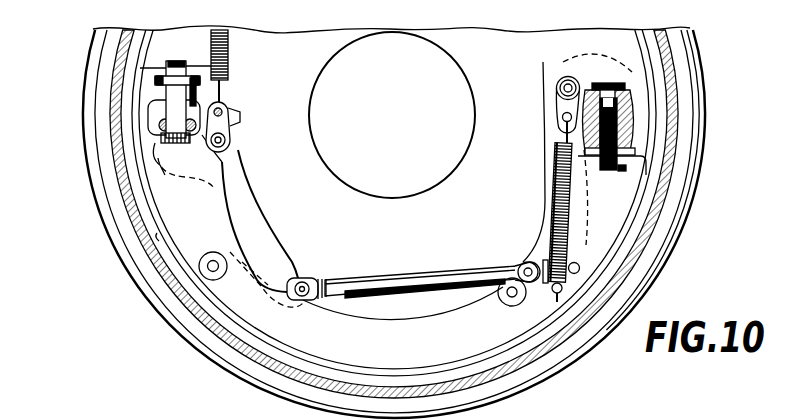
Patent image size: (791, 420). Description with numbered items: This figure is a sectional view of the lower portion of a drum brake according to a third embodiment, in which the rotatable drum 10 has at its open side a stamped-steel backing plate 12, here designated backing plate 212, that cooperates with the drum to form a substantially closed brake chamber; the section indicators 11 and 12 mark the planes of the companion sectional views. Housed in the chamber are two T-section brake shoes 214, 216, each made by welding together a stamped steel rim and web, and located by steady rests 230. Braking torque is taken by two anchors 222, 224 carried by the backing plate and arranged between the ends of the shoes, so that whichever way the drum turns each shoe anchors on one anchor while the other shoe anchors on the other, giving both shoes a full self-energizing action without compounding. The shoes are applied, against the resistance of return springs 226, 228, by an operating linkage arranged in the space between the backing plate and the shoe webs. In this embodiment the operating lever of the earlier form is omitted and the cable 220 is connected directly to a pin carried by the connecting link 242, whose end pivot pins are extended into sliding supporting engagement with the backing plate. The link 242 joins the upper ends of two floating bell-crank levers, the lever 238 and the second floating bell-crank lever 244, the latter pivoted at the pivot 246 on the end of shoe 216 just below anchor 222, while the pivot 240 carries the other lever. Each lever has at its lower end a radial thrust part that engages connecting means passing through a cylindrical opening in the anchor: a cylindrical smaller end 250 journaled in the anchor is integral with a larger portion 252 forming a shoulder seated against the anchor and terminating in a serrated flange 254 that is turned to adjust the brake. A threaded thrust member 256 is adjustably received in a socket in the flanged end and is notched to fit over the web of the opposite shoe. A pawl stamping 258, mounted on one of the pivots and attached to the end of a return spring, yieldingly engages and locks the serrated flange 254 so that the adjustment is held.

The rotatable drum 10 is at (660, 208).
The section line 11- 11 is at (260, 295).
The backing plate 12 is at (577, 44).
The backing plate 212 is at (497, 47).
The brake shoe 214 is at (197, 45).
The brake shoe 216 is at (173, 212).
The cable 220 is at (441, 268).
The anchor 222 is at (161, 100).
The anchor 224 is at (627, 138).
The return spring 226 is at (222, 78).
The return spring 228 is at (557, 197).
The steady rest 230 is at (203, 273).
The floating bell-crank lever 238 is at (556, 128).
The pivot 240 is at (556, 88).
The connecting link 242 is at (345, 281).
The second floating bell-crank lever 244 is at (250, 203).
The pivot 246 is at (230, 136).
The cylindrical smaller end 250 is at (625, 85).
The larger portion 252 is at (165, 81).
The serrated flange 254 is at (168, 62).
The threaded thrust member 256 is at (224, 62).
The pawl stamping 258 is at (166, 108).